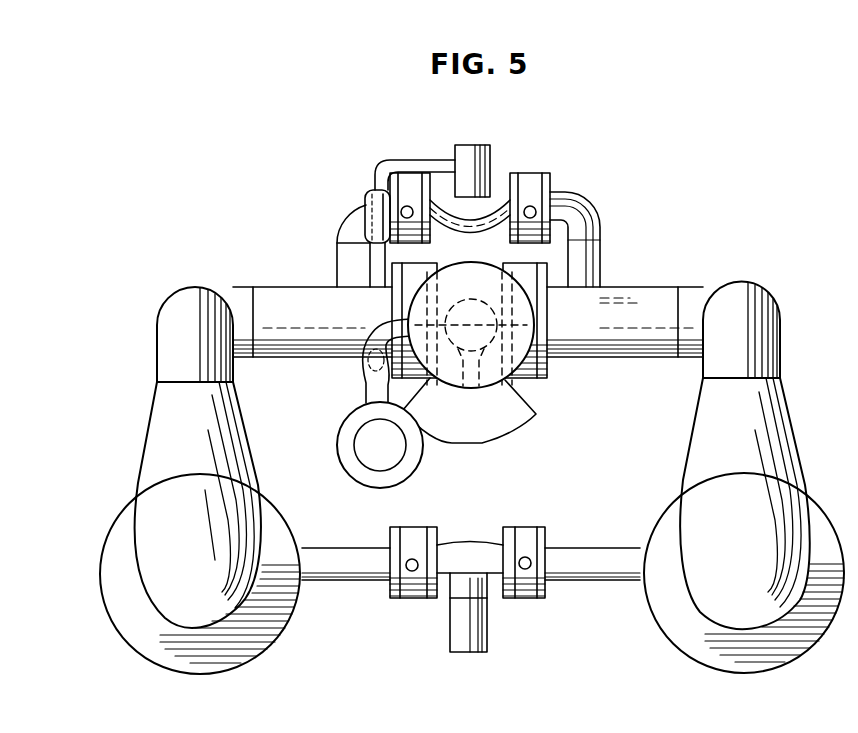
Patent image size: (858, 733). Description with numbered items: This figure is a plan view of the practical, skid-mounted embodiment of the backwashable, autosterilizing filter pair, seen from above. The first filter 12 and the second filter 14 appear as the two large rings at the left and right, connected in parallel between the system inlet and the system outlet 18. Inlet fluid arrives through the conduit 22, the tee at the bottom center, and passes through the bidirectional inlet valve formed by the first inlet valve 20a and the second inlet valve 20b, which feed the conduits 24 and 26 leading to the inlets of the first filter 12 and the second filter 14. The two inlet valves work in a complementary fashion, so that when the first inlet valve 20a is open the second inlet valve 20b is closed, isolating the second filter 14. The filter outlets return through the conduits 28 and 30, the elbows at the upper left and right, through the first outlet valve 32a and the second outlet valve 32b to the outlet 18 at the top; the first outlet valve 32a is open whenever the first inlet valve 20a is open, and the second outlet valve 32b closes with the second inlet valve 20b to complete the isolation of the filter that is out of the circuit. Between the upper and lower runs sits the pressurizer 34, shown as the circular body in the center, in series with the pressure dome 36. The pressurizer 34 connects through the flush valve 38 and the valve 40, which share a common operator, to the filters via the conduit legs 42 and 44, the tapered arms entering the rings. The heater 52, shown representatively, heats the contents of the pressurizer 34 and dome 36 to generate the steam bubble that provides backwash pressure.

The first filter 12 is at (111, 622).
The second filter 14 is at (793, 660).
The system outlet 18 is at (491, 160).
The first inlet valve 20a is at (396, 528).
The second inlet valve 20b is at (525, 528).
The conduit 22 is at (490, 620).
The conduit 24 is at (350, 580).
The conduit 26 is at (589, 580).
The conduit 28 is at (352, 228).
The conduit 30 is at (580, 222).
The first outlet valve 32a is at (408, 194).
The second outlet valve 32b is at (530, 193).
The pressurizer 34 is at (478, 335).
The pressure dome 36 is at (513, 307).
The flush valve 38 is at (413, 297).
The valve 40 is at (530, 270).
The conduit leg 42 is at (186, 354).
The conduit leg 44 is at (757, 360).
The heater 52 is at (394, 458).